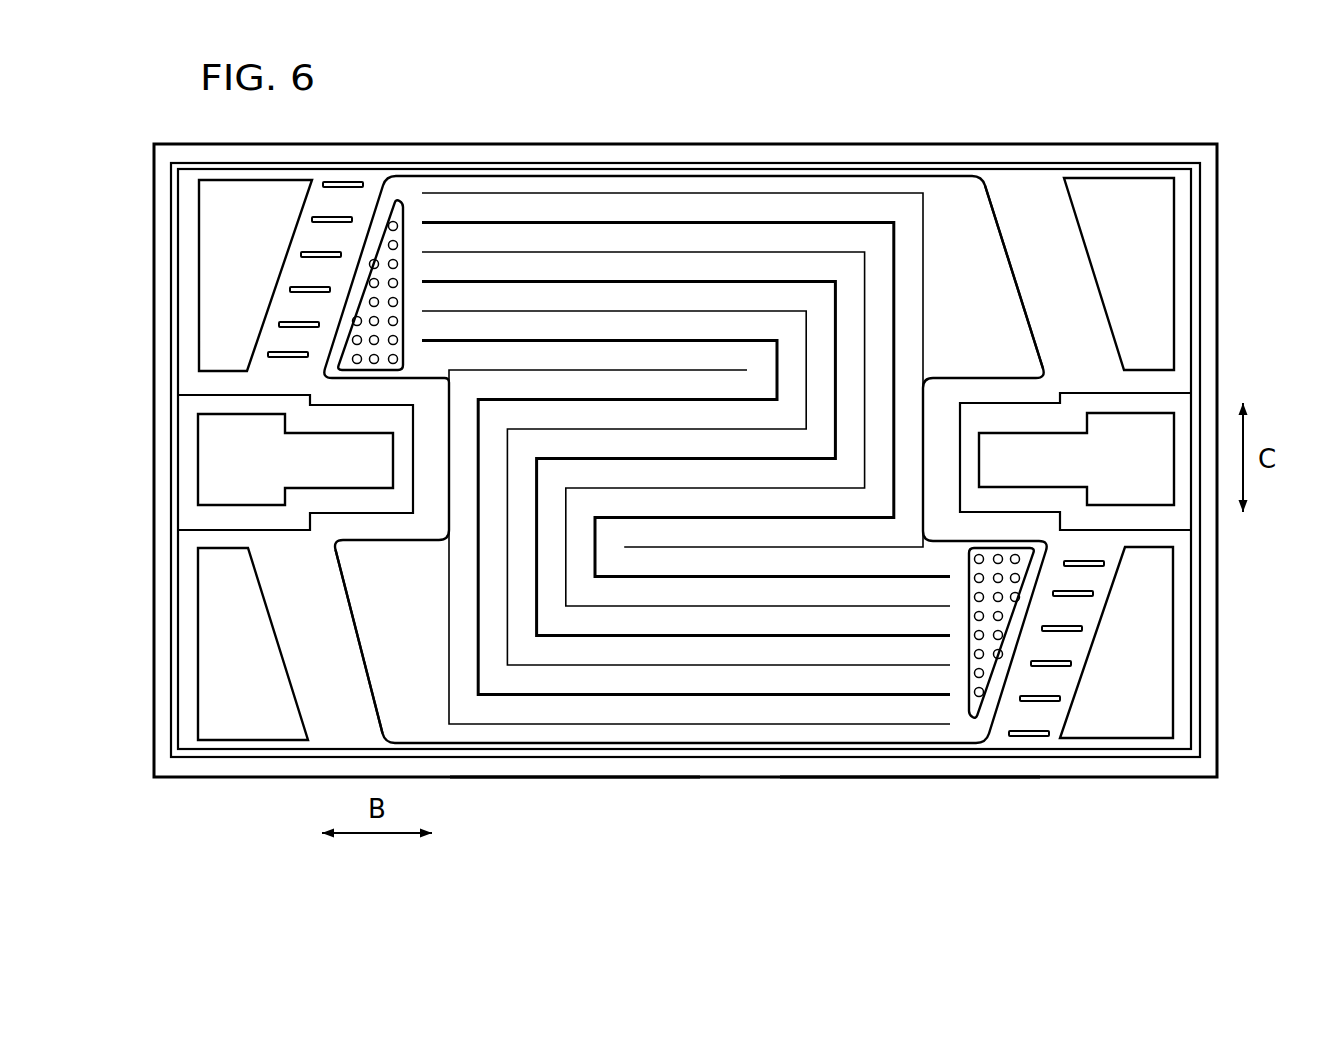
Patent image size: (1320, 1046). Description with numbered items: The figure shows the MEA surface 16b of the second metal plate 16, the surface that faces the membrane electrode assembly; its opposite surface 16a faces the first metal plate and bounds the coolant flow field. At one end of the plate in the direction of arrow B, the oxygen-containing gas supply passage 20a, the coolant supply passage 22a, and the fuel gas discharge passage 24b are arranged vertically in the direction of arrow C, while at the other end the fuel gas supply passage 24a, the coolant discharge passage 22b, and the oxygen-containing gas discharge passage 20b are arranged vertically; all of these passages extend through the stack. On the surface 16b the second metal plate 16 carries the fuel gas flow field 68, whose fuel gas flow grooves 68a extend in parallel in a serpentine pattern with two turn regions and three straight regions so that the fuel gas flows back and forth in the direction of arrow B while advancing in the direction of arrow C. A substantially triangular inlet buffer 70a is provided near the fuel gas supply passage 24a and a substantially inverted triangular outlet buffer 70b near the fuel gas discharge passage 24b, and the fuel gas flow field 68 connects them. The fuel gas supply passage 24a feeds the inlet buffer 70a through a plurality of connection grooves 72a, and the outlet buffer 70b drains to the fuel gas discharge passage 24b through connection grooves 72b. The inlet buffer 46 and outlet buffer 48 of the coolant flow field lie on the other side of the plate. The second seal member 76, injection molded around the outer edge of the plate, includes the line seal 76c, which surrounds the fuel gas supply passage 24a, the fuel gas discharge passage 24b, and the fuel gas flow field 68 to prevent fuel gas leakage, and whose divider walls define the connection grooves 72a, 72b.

The second metal plate 16 is at (872, 101).
The surface of the second metal plate 16a is at (892, 763).
The MEA surface of the second metal plate 16b is at (585, 765).
The oxygen-containing gas supply passage 20a is at (1119, 274).
The oxygen-containing gas discharge passage 20b is at (253, 644).
The coolant supply passage 22a is at (1076, 461).
The coolant discharge passage 22b is at (295, 462).
The fuel gas supply passage 24a is at (255, 275).
The fuel gas discharge passage 24b is at (1116, 642).
The inlet buffer 46 is at (1042, 345).
The outlet buffer 48 is at (328, 573).
The fuel gas flow field 68 is at (686, 415).
The fuel gas flow grooves 68a is at (619, 252).
The inlet buffer 70a is at (396, 200).
The outlet buffer 70b is at (972, 710).
The connection grooves 72a is at (293, 343).
The connection grooves 72b is at (1085, 578).
The second seal member 76 is at (872, 160).
The line seal 76c is at (477, 168).